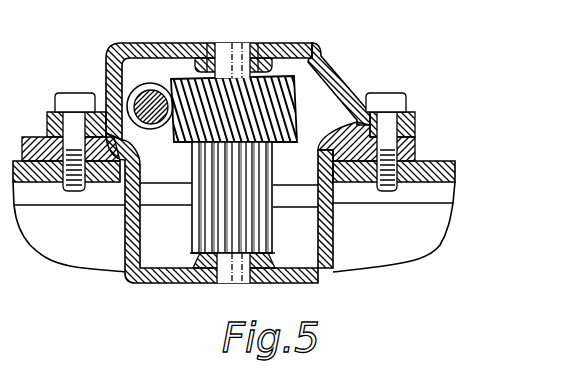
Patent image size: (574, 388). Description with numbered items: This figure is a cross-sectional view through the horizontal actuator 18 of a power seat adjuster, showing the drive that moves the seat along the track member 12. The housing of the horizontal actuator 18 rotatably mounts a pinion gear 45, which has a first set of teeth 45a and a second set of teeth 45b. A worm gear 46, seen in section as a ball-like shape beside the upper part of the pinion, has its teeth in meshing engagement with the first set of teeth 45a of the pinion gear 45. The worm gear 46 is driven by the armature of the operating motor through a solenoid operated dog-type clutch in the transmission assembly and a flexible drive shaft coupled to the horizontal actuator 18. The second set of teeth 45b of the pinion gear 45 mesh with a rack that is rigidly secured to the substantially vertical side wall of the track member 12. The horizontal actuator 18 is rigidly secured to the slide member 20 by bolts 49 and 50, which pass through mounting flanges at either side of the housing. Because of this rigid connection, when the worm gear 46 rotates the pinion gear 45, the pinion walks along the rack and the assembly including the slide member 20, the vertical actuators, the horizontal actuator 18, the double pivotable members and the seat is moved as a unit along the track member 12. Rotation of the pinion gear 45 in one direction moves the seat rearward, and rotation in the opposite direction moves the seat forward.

The track member 12 is at (91, 248).
The horizontal actuator 18 is at (131, 43).
The slide member 20 is at (429, 174).
The pinion gear 45 is at (192, 232).
The first set of teeth 45a is at (298, 110).
The second set of teeth 45b is at (274, 243).
The worm gear 46 is at (147, 126).
The bolt 49 is at (79, 100).
The bolt 50 is at (380, 100).